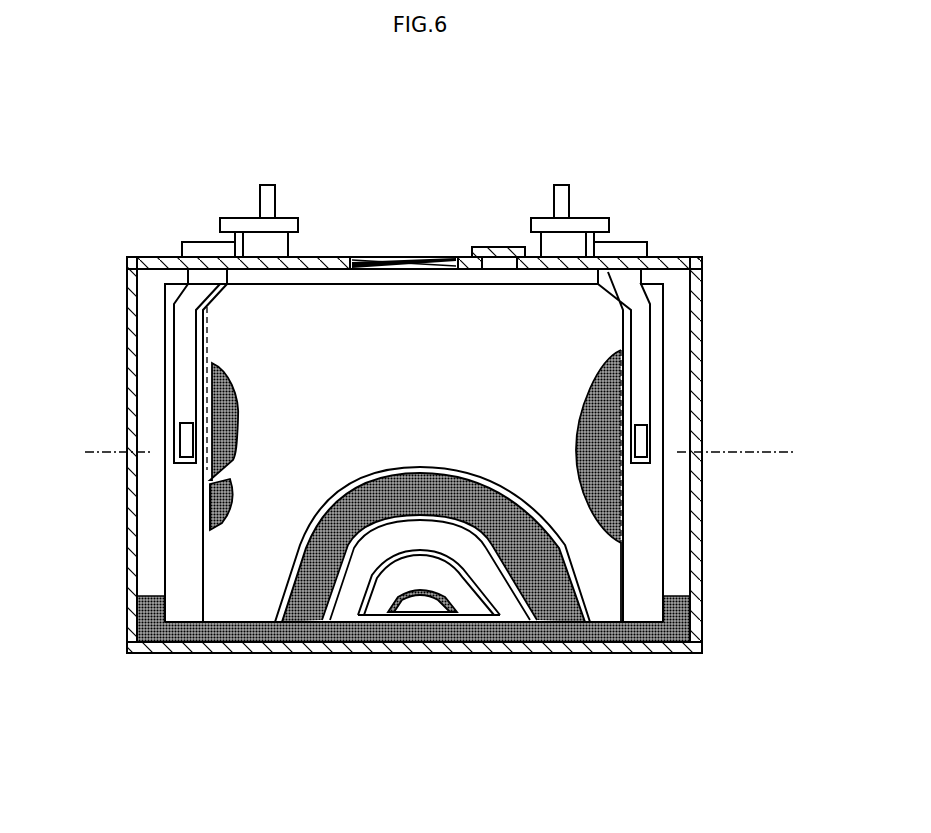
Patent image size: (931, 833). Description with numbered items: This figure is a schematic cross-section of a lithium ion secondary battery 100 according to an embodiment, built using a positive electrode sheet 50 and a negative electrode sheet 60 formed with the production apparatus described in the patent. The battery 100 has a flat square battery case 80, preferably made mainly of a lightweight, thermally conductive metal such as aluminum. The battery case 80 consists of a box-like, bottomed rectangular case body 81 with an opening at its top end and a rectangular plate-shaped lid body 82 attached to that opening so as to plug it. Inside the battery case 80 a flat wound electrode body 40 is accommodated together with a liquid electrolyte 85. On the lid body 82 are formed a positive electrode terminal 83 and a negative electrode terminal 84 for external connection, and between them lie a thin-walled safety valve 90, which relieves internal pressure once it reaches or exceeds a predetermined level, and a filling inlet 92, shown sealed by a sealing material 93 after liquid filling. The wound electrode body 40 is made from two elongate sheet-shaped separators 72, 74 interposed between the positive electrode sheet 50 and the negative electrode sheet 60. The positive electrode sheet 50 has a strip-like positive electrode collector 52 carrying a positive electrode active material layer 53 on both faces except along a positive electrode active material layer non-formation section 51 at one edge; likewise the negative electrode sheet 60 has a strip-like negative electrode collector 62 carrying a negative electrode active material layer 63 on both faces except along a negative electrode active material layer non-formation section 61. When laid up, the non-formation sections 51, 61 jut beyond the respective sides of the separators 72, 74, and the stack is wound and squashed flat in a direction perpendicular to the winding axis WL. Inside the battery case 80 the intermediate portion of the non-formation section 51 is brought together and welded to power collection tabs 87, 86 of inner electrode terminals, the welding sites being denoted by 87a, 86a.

The wound electrode body 40 is at (312, 305).
The positive electrode sheet 50 is at (386, 605).
The positive electrode active material layer non-formation section 51 is at (180, 599).
The positive electrode collector 52 is at (160, 580).
The positive electrode active material layer 53 is at (224, 417).
The negative electrode sheet 60 is at (200, 513).
The negative electrode active material layer non-formation section 61 is at (650, 482).
The negative electrode collector 62 is at (664, 512).
The negative electrode active material layer 63 is at (231, 503).
The separator 72 is at (240, 555).
The separator 74 is at (202, 478).
The battery case 80 is at (527, 664).
The case body 81 is at (703, 612).
The lid body 82 is at (340, 257).
The positive electrode terminal 83 is at (252, 206).
The negative electrode terminal 84 is at (577, 206).
The liquid electrolyte 85 is at (630, 634).
The power collection tab 86 is at (664, 345).
The welding site 86a is at (650, 434).
The power collection tab 87 is at (172, 340).
The welding site 87a is at (181, 436).
The safety valve 90 is at (402, 257).
The filling inlet 92 is at (505, 222).
The sealing material 93 is at (493, 247).
The lithium ion secondary battery 100 is at (716, 216).
The winding axis WL is at (460, 443).